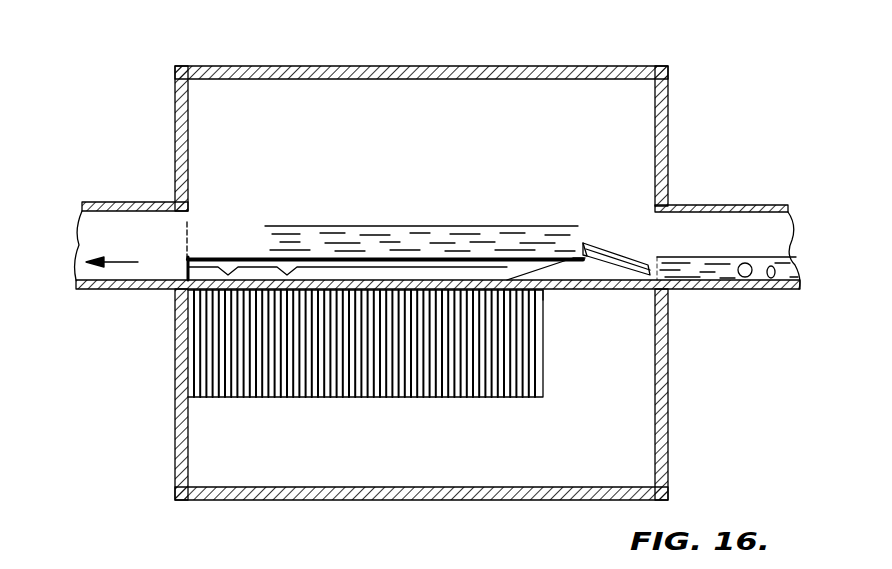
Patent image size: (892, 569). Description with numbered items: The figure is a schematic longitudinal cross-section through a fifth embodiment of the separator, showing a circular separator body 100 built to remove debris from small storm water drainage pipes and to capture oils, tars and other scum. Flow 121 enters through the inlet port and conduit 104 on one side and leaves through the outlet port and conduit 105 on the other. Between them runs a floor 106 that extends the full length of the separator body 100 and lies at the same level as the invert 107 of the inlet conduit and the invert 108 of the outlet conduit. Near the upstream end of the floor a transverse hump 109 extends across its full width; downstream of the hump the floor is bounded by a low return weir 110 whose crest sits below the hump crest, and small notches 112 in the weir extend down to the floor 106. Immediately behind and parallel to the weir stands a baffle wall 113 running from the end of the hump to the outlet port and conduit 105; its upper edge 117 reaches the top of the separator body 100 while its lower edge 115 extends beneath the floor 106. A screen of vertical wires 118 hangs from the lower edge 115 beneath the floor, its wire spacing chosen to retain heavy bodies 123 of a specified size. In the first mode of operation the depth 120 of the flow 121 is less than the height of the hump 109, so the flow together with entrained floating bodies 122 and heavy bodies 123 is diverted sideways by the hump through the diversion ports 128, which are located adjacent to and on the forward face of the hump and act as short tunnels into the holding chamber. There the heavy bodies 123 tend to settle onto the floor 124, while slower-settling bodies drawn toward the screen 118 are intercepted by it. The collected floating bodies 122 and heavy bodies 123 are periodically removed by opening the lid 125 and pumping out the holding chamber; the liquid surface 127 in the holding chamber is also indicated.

The separator body 100 is at (461, 285).
The inlet port and conduit 104 is at (700, 290).
The outlet port and conduit 105 is at (138, 202).
The floor 106 is at (622, 290).
The invert of the inlet conduit 107 is at (662, 214).
The invert of the outlet conduit 108 is at (185, 223).
The transverse hump 109 is at (569, 268).
The low return weir 110 is at (385, 217).
The notches 112 is at (228, 272).
The baffle wall 113 is at (386, 144).
The lower edges of the baffles 115 is at (545, 292).
The upper edges of the baffles 117 is at (270, 80).
The screen of vertical wires 118 is at (545, 370).
The depth of flow 120 is at (722, 254).
The flow 121 is at (113, 264).
The floating bodies 122 is at (750, 290).
The heavy bodies 123 is at (785, 290).
The floor of the separator/holding chamber 124 is at (283, 500).
The lid 125 is at (555, 70).
The liquid 127 is at (443, 228).
The diversion ports 128 is at (615, 250).